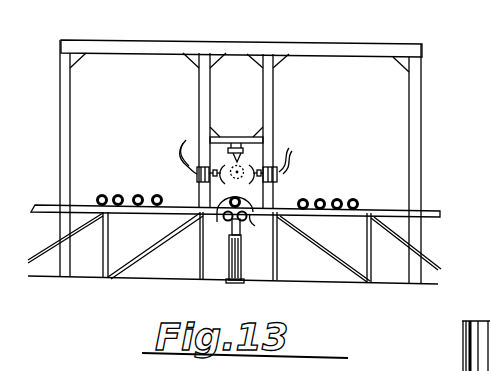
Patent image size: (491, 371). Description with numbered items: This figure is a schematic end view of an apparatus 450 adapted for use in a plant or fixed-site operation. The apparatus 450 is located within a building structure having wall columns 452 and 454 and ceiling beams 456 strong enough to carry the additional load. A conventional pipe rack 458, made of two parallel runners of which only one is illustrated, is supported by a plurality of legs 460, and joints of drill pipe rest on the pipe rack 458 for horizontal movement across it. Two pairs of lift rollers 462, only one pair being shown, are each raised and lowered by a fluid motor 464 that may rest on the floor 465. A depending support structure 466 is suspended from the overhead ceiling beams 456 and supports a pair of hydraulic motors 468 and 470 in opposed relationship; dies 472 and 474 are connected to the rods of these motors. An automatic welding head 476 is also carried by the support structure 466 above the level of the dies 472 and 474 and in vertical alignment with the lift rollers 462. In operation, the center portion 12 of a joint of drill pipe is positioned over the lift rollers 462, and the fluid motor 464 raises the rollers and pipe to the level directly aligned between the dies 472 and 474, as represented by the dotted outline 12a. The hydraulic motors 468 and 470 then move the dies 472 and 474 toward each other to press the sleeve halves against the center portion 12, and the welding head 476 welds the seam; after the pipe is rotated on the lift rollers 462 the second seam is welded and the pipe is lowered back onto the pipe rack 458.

The apparatus 450 is at (310, 43).
The wall column 452 is at (422, 134).
The wall column 454 is at (70, 110).
The ceiling beams 456 is at (168, 47).
The pipe rack 458 is at (317, 219).
The legs 460 is at (193, 242).
The lift rollers 462 is at (241, 226).
The fluid motor 464 is at (231, 281).
The floor 465 is at (182, 277).
The support structure 466 is at (273, 114).
The hydraulic motor 468 is at (287, 158).
The hydraulic motor 470 is at (185, 162).
The die 472 is at (254, 180).
The die 474 is at (220, 178).
The automatic welding head 476 is at (238, 149).
The center portion 12 is at (124, 196).
The dotted outline 12a is at (250, 165).